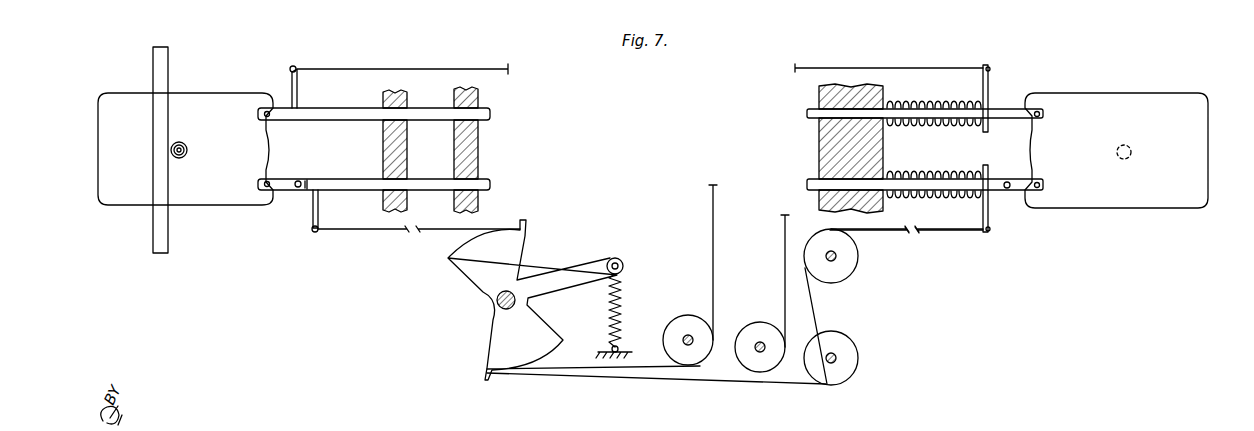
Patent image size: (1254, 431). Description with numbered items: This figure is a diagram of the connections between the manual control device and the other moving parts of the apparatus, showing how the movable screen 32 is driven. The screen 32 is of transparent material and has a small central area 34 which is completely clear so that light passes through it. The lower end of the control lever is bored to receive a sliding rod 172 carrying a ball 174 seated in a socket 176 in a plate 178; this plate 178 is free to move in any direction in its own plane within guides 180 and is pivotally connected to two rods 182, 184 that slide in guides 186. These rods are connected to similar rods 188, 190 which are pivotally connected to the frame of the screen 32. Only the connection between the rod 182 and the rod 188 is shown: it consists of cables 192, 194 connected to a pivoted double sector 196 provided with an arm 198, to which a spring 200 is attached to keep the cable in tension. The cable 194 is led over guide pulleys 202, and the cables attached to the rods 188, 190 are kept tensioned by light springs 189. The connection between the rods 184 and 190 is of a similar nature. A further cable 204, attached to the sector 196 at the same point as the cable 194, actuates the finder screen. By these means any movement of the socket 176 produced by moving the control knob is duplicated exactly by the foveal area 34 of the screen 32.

The movable screen 32 is at (1175, 108).
The small central clear area 34 is at (1122, 160).
The sliding rod 172 is at (188, 148).
The ball 174 is at (180, 158).
The socket 176 is at (177, 143).
The plate 178 is at (137, 190).
The guides 180 is at (160, 82).
The rod 182 is at (357, 183).
The rod 184 is at (343, 112).
The guides 186 is at (468, 149).
The rod 188 is at (950, 186).
The light springs 189 is at (955, 170).
The rod 190 is at (910, 113).
The cable 192 is at (437, 228).
The cable 194 is at (880, 232).
The pivoted double sector 196 is at (485, 263).
The arm 198 is at (580, 272).
The spring 200 is at (620, 310).
The guide pulleys 202 is at (840, 353).
The cable 204 is at (783, 300).